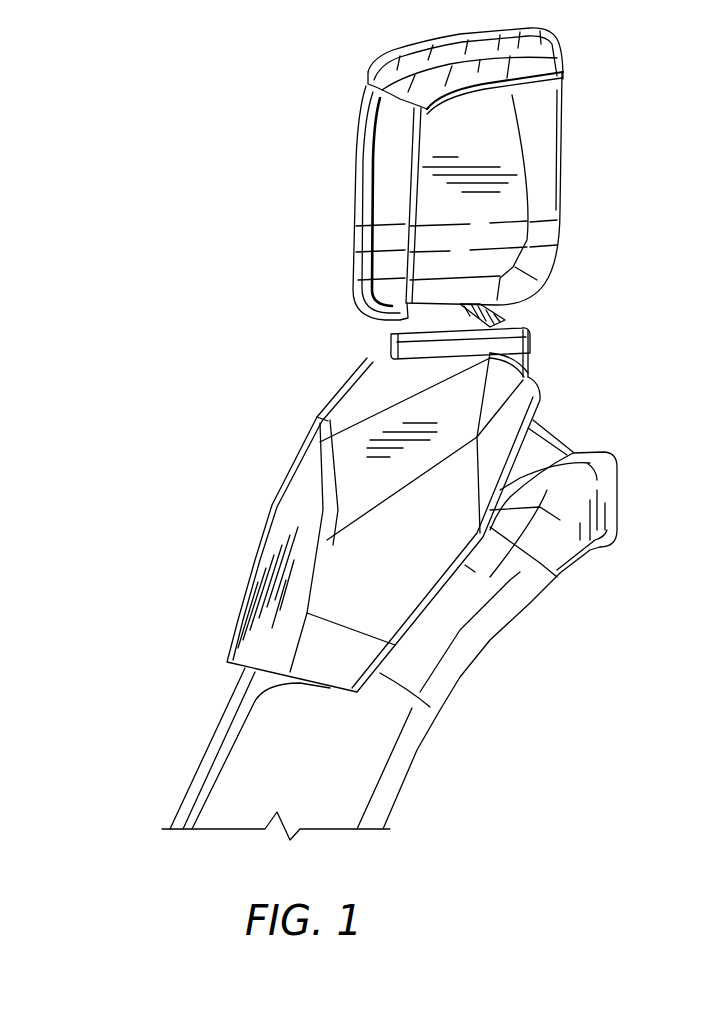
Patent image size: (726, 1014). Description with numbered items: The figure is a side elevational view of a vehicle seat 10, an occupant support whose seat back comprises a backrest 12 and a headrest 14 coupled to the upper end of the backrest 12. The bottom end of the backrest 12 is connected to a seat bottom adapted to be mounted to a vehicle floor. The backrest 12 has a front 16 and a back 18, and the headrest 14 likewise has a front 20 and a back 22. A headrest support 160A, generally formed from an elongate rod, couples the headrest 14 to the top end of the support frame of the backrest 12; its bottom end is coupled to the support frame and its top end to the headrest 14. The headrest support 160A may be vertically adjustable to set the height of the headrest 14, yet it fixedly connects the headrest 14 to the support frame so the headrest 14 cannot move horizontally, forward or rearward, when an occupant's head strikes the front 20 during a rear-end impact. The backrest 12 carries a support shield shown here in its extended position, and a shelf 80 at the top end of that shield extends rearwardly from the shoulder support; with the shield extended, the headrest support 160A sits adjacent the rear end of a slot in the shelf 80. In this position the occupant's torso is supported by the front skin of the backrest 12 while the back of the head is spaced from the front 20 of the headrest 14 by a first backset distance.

The vehicle seat 10 is at (606, 329).
The backrest 12 is at (489, 694).
The headrest 14 is at (592, 124).
The front 16 is at (245, 590).
The back 18 is at (533, 597).
The front 20 is at (357, 195).
The back 22 is at (565, 173).
The shelf 80 is at (521, 323).
The headrest support 160A is at (498, 315).